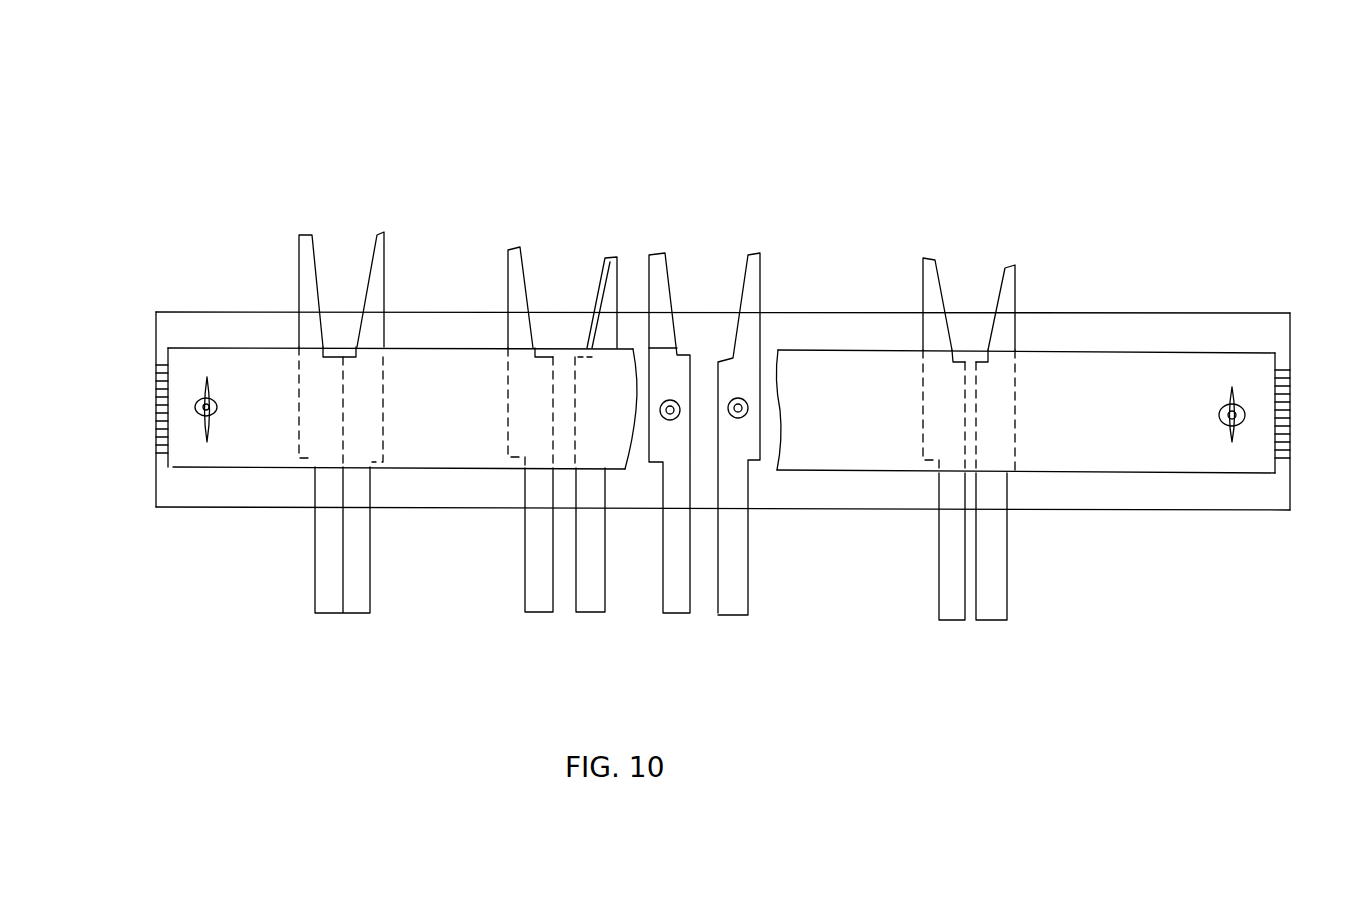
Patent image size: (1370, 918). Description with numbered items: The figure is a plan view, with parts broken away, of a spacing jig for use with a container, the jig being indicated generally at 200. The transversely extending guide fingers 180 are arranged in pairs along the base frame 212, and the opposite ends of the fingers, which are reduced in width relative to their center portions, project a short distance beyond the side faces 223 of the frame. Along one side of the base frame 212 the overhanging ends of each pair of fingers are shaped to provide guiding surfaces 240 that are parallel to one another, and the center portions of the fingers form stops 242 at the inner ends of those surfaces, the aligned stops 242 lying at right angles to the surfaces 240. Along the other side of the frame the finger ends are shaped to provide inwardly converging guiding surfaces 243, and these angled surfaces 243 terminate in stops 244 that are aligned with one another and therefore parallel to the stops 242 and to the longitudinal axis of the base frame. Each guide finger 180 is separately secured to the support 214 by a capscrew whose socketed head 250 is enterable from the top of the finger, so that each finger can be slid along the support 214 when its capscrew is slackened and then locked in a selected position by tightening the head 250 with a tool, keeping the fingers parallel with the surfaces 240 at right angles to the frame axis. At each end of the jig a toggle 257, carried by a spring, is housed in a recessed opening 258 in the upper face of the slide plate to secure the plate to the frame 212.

The guide fingers 180 is at (377, 235).
The mounting assembly 200 is at (1232, 228).
The base frame 212 is at (156, 452).
The support 214 is at (1292, 398).
The side faces 223 is at (186, 311).
The guiding surfaces 240 is at (313, 593).
The stops 242 is at (368, 460).
The inwardly converging guiding surfaces 243 is at (321, 272).
The stops 244 is at (352, 357).
The socketed head 250 is at (748, 405).
The toggle 257 is at (208, 435).
The recessed opening 258 is at (215, 398).